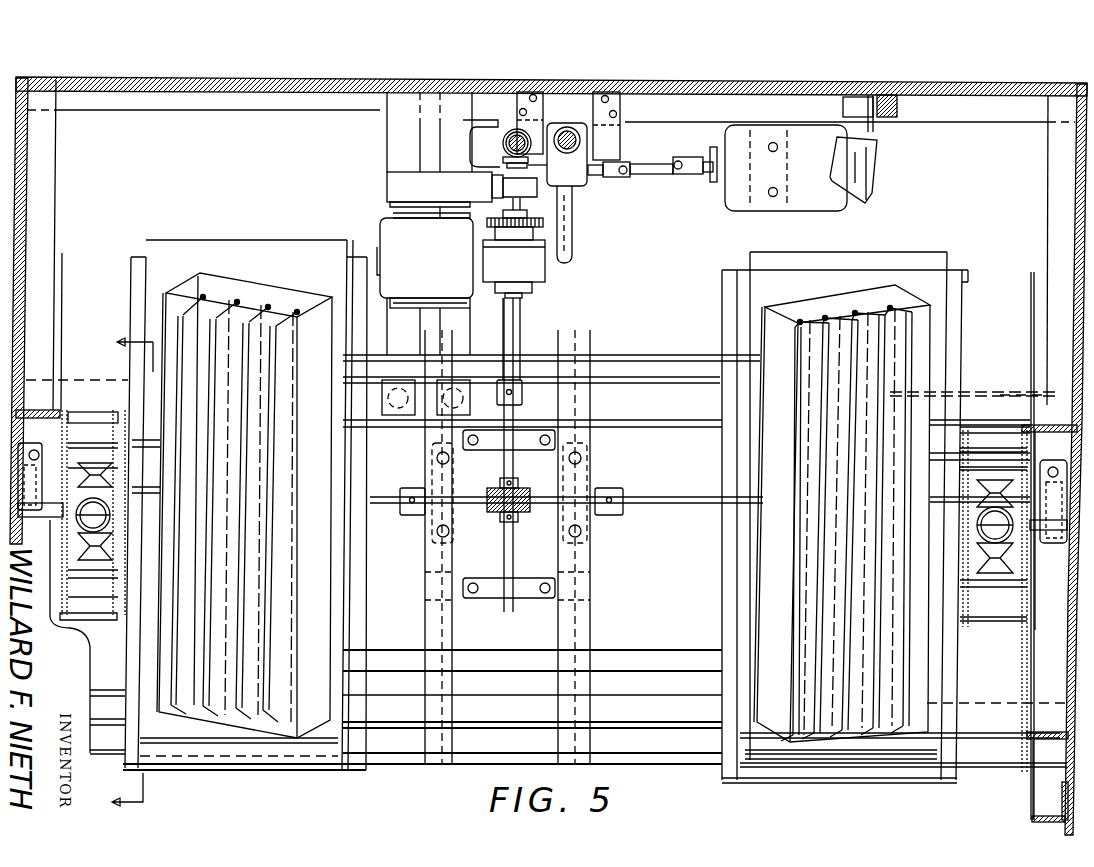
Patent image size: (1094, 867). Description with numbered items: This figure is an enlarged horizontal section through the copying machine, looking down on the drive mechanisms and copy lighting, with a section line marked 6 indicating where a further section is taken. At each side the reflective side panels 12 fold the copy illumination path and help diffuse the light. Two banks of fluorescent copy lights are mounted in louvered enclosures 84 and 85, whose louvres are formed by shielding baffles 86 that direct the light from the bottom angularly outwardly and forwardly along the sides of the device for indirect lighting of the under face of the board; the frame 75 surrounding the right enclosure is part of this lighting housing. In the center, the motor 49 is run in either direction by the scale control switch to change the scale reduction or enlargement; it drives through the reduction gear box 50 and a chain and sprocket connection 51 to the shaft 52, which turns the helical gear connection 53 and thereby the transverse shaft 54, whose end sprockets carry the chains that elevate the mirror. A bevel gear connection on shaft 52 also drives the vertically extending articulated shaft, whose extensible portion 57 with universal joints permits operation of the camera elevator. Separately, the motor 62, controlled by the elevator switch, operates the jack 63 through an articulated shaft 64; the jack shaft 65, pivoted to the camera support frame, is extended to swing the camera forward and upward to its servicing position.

The reflective side panels 12 is at (65, 275).
The motor 49 is at (400, 233).
The reduction gear box 50 is at (533, 267).
The chain and sprocket connection 51 is at (487, 227).
The shaft 52 is at (513, 537).
The helical gear connection 53 is at (523, 490).
The shaft 54 is at (681, 470).
The extensible portion of articulated shaft 57 is at (503, 145).
The motor 62 is at (745, 212).
The jack 63 is at (577, 178).
The articulated shaft 64 is at (642, 176).
The jack shaft 65 is at (565, 225).
The louver frame 75 is at (735, 327).
The louvered enclosure 84 is at (273, 295).
The louvered enclosure 85 is at (818, 305).
The shielding baffles 86 is at (220, 322).
The section line 6- 6 is at (120, 570).